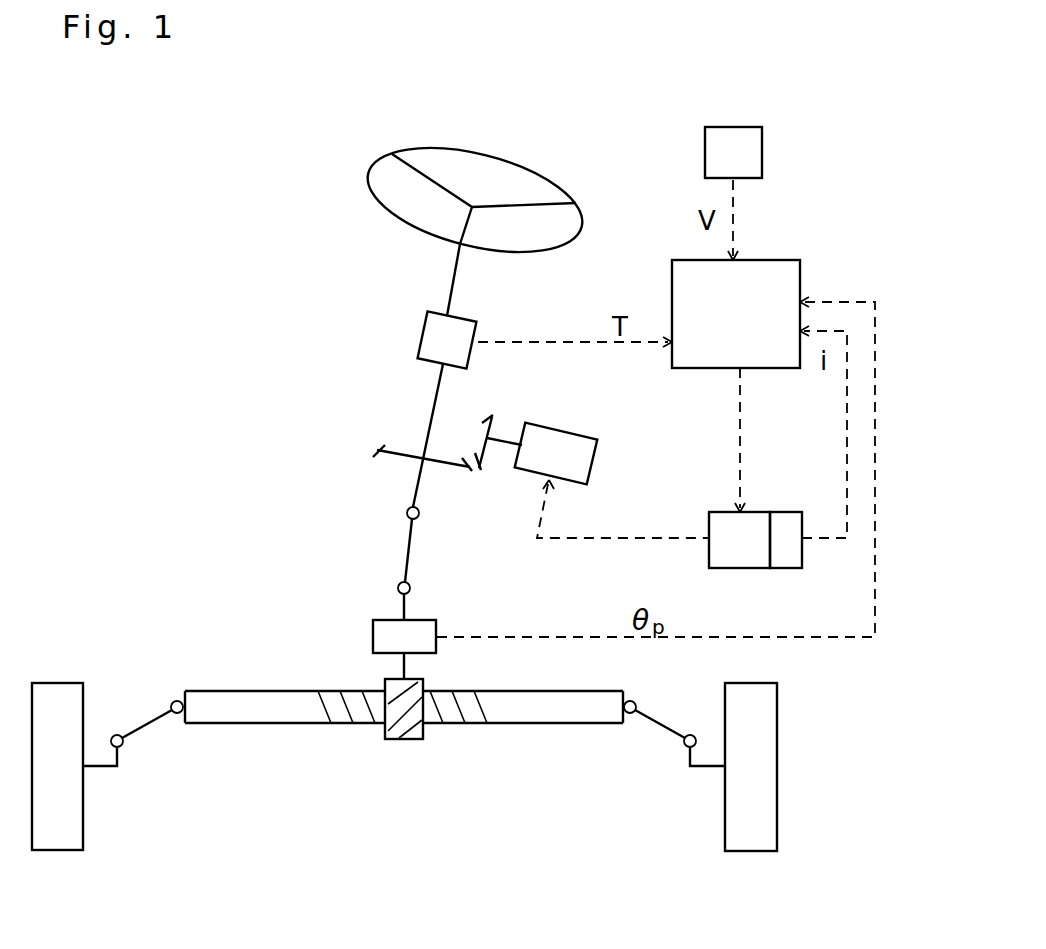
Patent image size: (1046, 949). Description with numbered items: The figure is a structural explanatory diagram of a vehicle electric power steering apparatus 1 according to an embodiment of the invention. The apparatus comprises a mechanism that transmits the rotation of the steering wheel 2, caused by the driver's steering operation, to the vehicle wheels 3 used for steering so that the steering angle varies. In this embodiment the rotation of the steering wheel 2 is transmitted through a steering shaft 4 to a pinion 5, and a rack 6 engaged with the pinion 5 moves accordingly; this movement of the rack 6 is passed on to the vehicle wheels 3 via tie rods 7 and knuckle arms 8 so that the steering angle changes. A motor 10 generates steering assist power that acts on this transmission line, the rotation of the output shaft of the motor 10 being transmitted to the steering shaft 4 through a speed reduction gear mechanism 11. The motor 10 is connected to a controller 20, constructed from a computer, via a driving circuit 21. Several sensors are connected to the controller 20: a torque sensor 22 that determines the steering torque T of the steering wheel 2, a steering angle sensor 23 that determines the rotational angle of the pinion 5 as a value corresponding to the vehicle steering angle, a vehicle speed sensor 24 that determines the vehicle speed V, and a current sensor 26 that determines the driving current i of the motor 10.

The electric power steering apparatus 1 is at (490, 143).
The steering wheel 2 is at (367, 183).
The vehicle wheels 3 is at (58, 833).
The steering shaft 4 is at (434, 413).
The pinion 5 is at (398, 728).
The rack 6 is at (337, 717).
The tie rods 7 is at (148, 728).
The knuckle arms 8 is at (100, 767).
The motor 10 is at (550, 443).
The speed reduction gear mechanism 11 is at (449, 470).
The controller 20 is at (777, 285).
The driving circuit 21 is at (727, 523).
The torque sensor 22 is at (431, 337).
The steering angle sensor 23 is at (381, 640).
The vehicle speed sensor 24 is at (727, 138).
The current sensor 26 is at (787, 521).